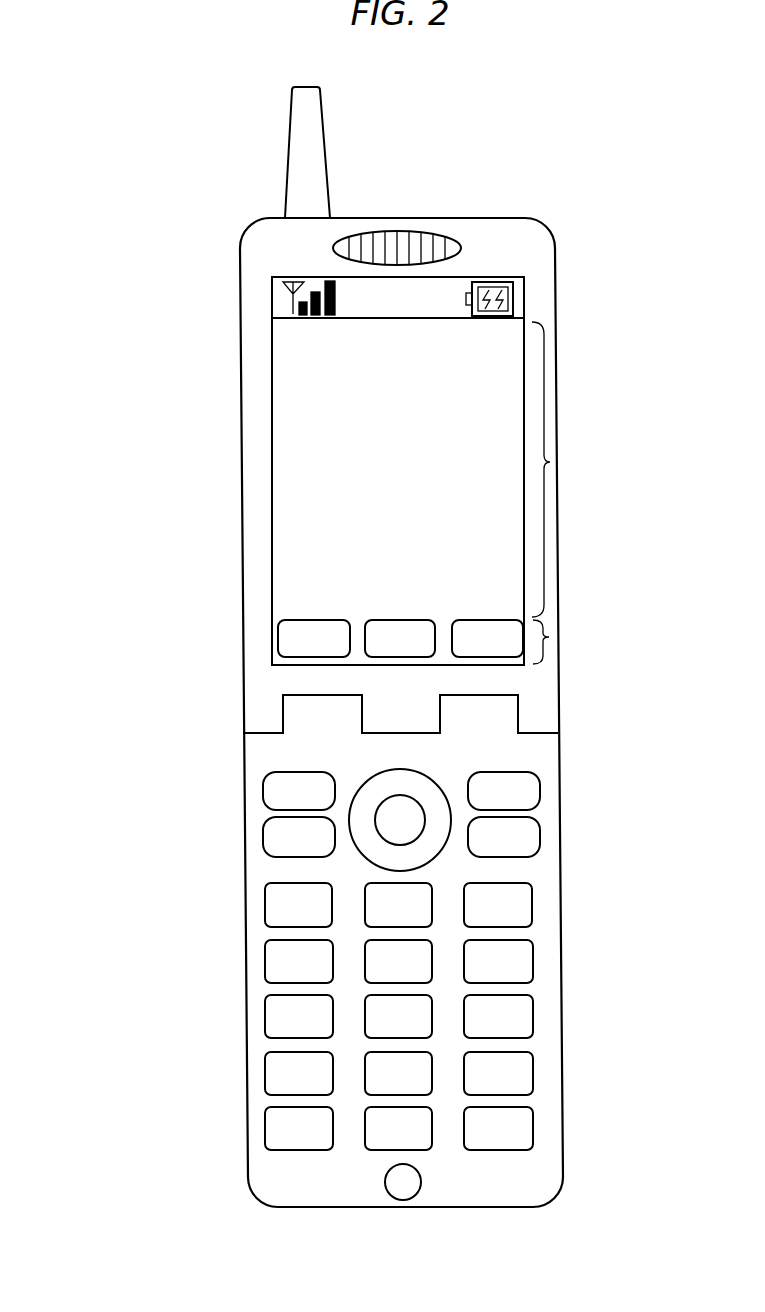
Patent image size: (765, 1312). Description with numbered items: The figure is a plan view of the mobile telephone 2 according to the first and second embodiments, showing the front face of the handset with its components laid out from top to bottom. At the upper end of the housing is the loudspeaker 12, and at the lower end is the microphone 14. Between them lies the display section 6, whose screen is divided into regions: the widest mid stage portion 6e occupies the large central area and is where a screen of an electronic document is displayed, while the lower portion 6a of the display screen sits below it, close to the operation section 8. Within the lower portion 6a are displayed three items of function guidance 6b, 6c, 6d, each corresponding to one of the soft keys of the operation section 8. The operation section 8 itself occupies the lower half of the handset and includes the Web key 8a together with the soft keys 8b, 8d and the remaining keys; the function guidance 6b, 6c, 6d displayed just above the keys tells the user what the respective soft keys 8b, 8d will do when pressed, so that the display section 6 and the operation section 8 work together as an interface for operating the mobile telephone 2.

The mobile telephone 2 is at (120, 147).
The loudspeaker 12 is at (403, 232).
The display section 6 is at (271, 428).
The widest mid stage portion 6e is at (550, 462).
The lower portion 6a is at (549, 637).
The function guidance 6b is at (311, 617).
The function guidance 6c is at (397, 617).
The function guidance 6d is at (484, 617).
The operation section 8 is at (610, 897).
The Web key 8a is at (263, 835).
The soft key 8b is at (263, 790).
The soft key 8d is at (540, 790).
The microphone 14 is at (404, 1200).